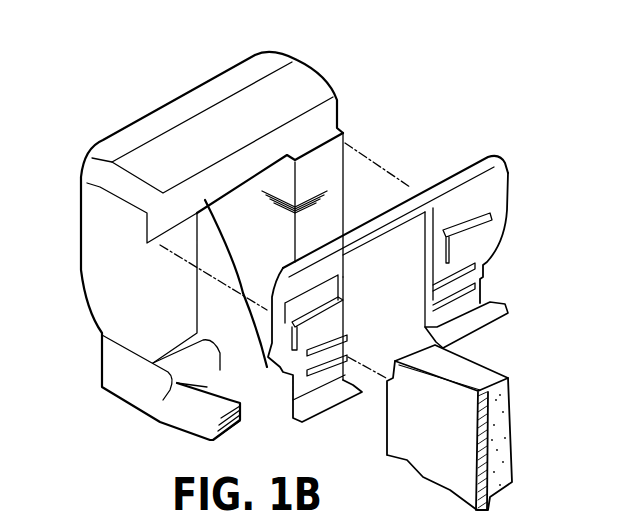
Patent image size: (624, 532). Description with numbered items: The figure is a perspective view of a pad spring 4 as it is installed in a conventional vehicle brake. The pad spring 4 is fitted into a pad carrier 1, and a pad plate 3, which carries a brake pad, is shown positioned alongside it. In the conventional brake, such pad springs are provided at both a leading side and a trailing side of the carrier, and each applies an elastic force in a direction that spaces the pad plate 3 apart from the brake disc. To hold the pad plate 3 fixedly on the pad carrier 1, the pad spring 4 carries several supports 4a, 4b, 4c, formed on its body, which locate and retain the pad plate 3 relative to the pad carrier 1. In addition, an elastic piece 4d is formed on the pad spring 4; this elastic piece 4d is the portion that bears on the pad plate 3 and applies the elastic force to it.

The pad carrier 1 is at (328, 60).
The pad plate 3 is at (412, 458).
The pad spring 4 is at (414, 257).
The support 4a is at (338, 333).
The support 4b is at (438, 187).
The support 4c is at (477, 318).
The elastic piece 4d is at (435, 307).